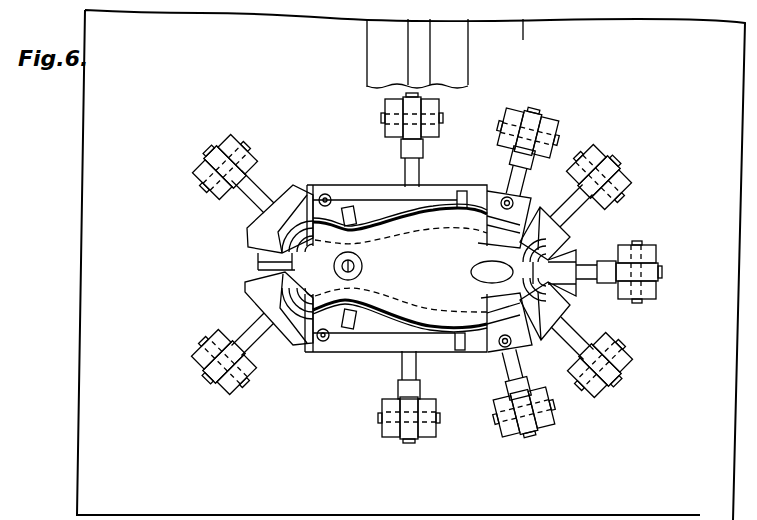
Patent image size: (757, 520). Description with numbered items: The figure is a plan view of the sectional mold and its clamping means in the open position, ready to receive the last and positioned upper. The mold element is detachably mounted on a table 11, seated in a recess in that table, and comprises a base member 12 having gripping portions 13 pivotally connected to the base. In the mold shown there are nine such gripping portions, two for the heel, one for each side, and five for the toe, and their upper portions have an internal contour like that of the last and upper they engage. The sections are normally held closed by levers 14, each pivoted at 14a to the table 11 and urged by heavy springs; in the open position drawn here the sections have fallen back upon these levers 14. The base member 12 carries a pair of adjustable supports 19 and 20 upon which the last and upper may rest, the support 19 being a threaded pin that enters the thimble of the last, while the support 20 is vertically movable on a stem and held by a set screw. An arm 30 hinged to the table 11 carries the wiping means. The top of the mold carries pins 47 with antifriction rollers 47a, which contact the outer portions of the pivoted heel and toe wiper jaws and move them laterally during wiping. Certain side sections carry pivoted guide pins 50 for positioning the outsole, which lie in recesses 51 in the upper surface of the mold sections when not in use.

The table 11 is at (411, 265).
The base member 12 is at (400, 268).
The gripping portions 13 is at (383, 190).
The levers 14 is at (419, 165).
The lever pivot 14a is at (445, 422).
The adjustable support 19 is at (335, 266).
The adjustable support 20 is at (475, 272).
The arm 30 is at (417, 53).
The pins 47 is at (300, 181).
The antifriction rollers 47a is at (327, 194).
The pins 50 is at (352, 213).
The recesses 51 is at (470, 188).